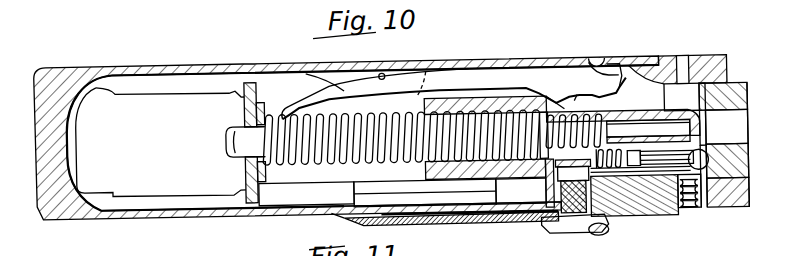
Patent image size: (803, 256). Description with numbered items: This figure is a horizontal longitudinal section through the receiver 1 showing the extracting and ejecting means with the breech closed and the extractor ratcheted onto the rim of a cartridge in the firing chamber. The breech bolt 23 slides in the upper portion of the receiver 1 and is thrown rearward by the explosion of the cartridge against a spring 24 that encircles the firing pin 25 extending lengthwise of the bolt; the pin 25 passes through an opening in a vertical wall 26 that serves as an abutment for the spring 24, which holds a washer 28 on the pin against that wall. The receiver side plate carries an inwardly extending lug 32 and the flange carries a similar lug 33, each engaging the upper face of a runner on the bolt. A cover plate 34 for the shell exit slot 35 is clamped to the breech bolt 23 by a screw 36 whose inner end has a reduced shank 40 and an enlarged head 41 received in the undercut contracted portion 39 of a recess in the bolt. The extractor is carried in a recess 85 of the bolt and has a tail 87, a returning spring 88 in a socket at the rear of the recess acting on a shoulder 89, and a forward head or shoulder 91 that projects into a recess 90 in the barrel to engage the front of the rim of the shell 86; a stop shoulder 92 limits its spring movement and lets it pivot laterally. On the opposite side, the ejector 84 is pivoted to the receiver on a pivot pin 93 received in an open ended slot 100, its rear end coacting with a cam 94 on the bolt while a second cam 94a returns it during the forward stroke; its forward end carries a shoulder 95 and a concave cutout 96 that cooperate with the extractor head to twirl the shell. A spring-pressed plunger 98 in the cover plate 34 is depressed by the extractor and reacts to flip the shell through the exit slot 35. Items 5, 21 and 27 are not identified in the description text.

The receiver 1 is at (108, 62).
The end block 5 is at (737, 94).
The slide 21 is at (440, 193).
The breech bolt 23 is at (481, 99).
The spring 24 is at (367, 158).
The firing pin 25 is at (243, 134).
The vertical wall 26 is at (247, 166).
The carrier 27 is at (460, 165).
The washer 28 is at (265, 170).
The lug 32 is at (273, 74).
The lug 33 is at (278, 193).
The cover plate 34 is at (363, 217).
The shell exit slot 35 is at (357, 217).
The screw 36 is at (573, 236).
The contracted portion 39 is at (586, 183).
The shank 40 is at (572, 170).
The enlarged head 41 is at (521, 192).
The ejector 84 is at (553, 70).
The recess 85 is at (673, 212).
The cartridge shell 86 is at (650, 212).
The tail 87 is at (633, 185).
The returning spring 88 is at (612, 182).
The shoulder 89 is at (648, 210).
The recess 90 is at (715, 208).
The shoulder 91 is at (723, 113).
The stop shoulder 92 is at (648, 130).
The pivot pin 93 is at (385, 73).
The cam 94 is at (427, 70).
The cam 94a is at (674, 112).
The shoulder 95 is at (578, 98).
The concave cutout 96 is at (598, 96).
The spring-pressed plunger 98 is at (707, 216).
The open ended slot 100 is at (380, 74).